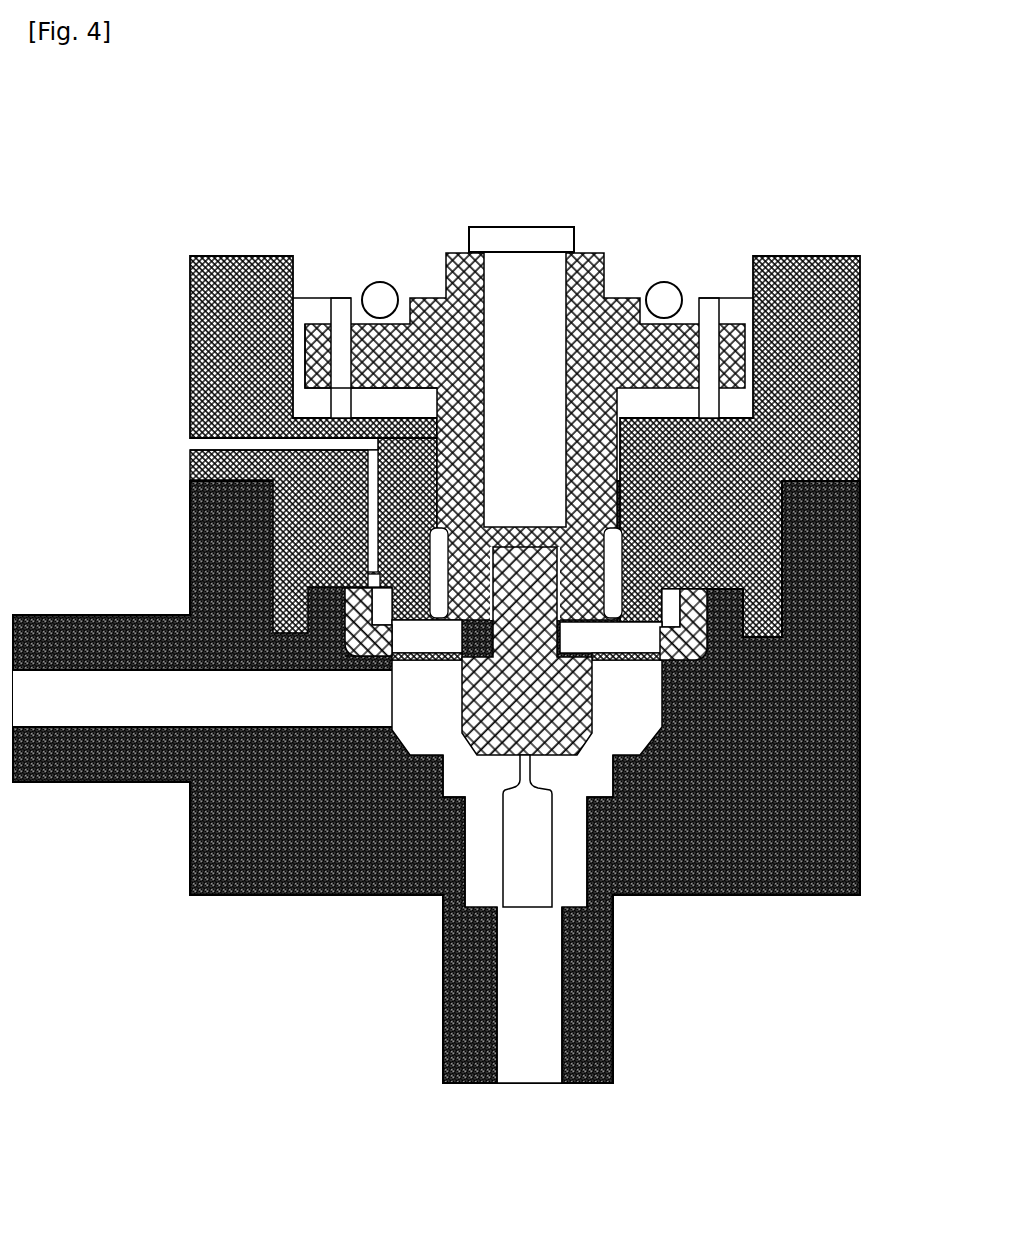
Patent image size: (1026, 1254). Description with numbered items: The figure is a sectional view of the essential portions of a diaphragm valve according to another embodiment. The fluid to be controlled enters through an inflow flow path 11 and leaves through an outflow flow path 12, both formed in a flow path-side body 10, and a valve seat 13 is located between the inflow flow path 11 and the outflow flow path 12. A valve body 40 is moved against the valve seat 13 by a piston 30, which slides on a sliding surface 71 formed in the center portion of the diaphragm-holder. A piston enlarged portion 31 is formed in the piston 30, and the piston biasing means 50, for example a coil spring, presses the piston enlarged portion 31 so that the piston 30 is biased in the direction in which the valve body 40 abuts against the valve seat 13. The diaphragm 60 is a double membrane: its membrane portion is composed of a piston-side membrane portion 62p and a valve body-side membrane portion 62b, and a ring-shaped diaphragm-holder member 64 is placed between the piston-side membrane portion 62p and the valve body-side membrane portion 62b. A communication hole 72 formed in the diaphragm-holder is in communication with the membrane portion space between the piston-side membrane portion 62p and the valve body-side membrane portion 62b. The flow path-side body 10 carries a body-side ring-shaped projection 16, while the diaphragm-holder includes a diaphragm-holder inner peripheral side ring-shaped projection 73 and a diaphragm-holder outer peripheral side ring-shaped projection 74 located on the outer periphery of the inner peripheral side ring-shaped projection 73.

The flow path-side body 10 is at (267, 876).
The inflow flow path 11 is at (86, 713).
The outflow flow path 12 is at (540, 970).
The valve seat 13 is at (598, 773).
The body-side ring-shaped projection 16 is at (735, 603).
The piston 30 is at (583, 253).
The piston enlarged portion 31 is at (350, 350).
The valve body 40 is at (567, 730).
The piston biasing means 50 is at (668, 293).
The diaphragm 60 is at (695, 587).
The valve body-side membrane portion 62b is at (428, 660).
The piston-side membrane portion 62p is at (393, 665).
The ring-shaped diaphragm-holder member 64 is at (372, 667).
The sliding surface 71 is at (440, 492).
The communication hole 72 is at (203, 437).
The diaphragm-holder inner peripheral side ring-shaped projection 73 is at (710, 640).
The diaphragm-holder outer peripheral side ring-shaped projection 74 is at (767, 623).